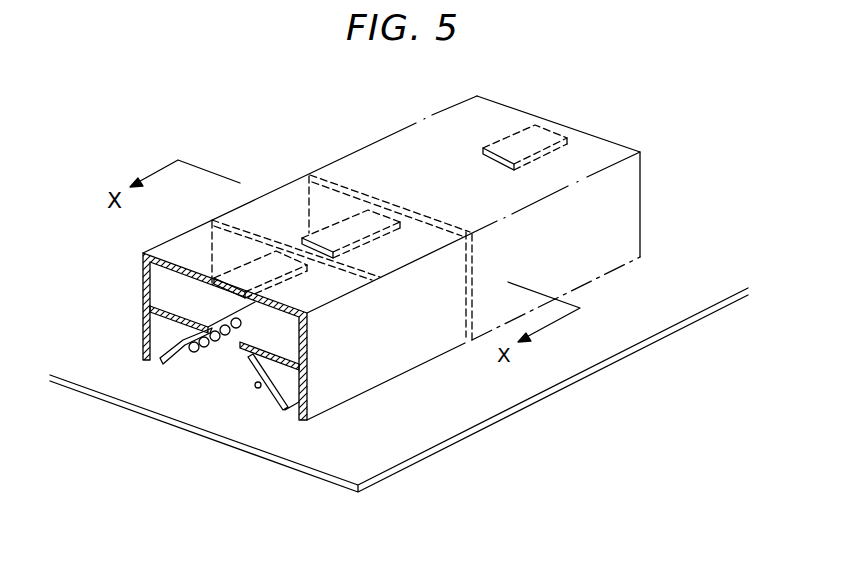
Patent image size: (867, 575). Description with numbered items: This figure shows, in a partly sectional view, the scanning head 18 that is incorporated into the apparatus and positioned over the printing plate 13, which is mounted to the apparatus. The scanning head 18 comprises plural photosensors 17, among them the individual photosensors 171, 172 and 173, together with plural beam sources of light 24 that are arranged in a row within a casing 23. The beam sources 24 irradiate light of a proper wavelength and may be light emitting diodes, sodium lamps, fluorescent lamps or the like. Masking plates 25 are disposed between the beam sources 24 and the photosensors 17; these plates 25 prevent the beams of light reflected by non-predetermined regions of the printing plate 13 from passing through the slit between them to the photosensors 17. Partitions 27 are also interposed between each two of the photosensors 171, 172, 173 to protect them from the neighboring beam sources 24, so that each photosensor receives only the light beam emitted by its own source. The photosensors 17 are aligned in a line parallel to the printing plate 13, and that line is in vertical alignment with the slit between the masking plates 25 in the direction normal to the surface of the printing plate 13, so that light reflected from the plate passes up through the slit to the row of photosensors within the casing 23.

The printing plate 13 is at (426, 448).
The photosensors 17 is at (390, 211).
The photosensor 171 is at (536, 140).
The photosensor 172 is at (380, 216).
The photosensor 173 is at (260, 252).
The scanning head 18 is at (391, 240).
The casing 23 is at (142, 280).
The beam sources of light 24 is at (190, 352).
The masking plates 25 is at (175, 309).
The partitions 27 is at (440, 218).